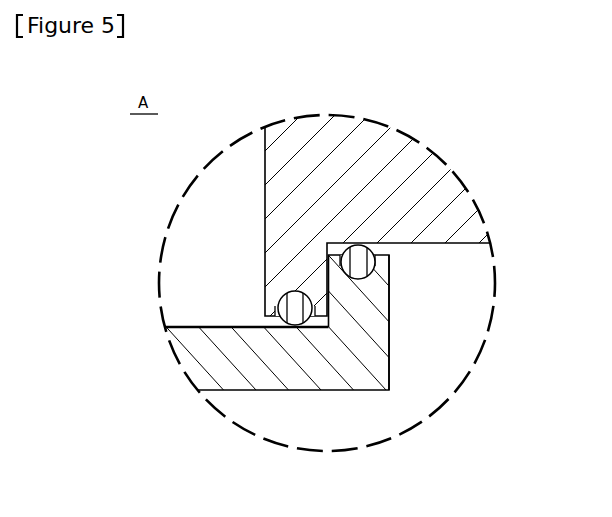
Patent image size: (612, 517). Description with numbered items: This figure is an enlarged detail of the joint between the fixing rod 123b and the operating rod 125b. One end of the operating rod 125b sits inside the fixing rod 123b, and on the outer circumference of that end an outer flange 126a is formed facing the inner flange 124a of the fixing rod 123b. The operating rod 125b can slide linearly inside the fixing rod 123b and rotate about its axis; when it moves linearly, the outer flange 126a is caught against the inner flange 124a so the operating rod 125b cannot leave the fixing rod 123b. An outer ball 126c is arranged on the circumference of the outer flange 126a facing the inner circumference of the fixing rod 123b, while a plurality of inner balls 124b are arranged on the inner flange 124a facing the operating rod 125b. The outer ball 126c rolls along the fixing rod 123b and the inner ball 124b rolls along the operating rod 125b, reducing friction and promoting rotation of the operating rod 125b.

The fixing rod 123b is at (233, 363).
The inner flange 124a is at (377, 296).
The inner ball 124b is at (358, 262).
The operating rod 125b is at (378, 160).
The outer flange 126a is at (272, 288).
The outer ball 126c is at (295, 308).